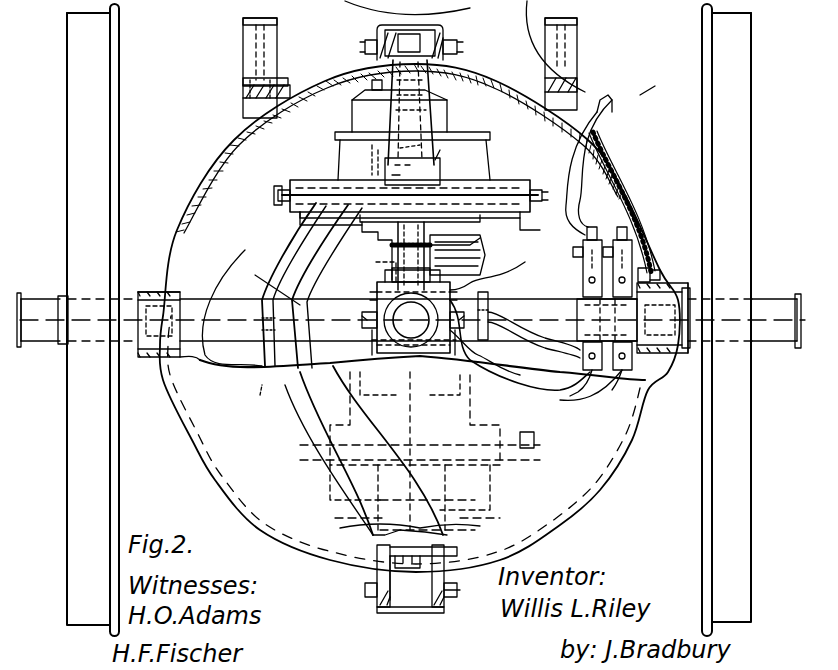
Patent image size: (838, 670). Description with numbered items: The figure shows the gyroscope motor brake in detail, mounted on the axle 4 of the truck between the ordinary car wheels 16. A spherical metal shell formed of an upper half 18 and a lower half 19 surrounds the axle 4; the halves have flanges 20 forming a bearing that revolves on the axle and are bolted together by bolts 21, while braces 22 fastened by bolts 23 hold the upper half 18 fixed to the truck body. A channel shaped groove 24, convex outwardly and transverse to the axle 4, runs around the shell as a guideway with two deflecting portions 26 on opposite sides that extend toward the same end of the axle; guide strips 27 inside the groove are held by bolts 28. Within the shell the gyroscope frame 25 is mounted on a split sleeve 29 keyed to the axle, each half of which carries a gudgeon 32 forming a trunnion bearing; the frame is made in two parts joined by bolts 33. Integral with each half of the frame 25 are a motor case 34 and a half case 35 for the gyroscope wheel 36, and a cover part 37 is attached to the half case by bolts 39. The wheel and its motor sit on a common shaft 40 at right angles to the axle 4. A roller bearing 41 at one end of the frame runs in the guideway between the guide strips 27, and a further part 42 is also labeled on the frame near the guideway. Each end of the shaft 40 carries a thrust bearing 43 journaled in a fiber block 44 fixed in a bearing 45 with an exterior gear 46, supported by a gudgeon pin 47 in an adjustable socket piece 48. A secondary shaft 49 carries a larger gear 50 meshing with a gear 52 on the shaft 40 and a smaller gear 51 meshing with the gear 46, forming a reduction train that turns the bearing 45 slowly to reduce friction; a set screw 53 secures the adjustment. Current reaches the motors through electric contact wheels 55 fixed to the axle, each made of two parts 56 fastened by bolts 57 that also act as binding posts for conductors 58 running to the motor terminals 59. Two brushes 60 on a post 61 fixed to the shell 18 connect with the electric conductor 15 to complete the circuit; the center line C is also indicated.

The axle 4 is at (34, 320).
The electric conductor 15 is at (612, 135).
The car wheels 16 is at (108, 182).
The upper half of spherical shell 18 is at (190, 206).
The lower half of spherical shell 19 is at (198, 458).
The flanges 20 is at (138, 334).
The bolts 21 is at (145, 292).
The braces 22 is at (262, 18).
The bolts 23 is at (243, 82).
The channel shaped groove 24 is at (440, 30).
The frame 25 is at (426, 110).
The deflecting portions 26 is at (228, 282).
The guide strips 27 is at (463, 47).
The bolts 28 is at (360, 50).
The split sleeve 29 is at (490, 300).
The gudgeon 32 is at (455, 380).
The bolts 33 is at (318, 383).
The motor case 34 is at (490, 178).
The half case 35 is at (340, 178).
The gyroscope wheel 36 is at (336, 175).
The cover part 37 is at (300, 222).
The bolts 39 is at (274, 190).
The shaft 40 is at (350, 186).
The roller bearing 41 is at (377, 38).
The arm rib 42 is at (255, 292).
The thrust bearing 43 is at (378, 260).
The fiber block 44 is at (377, 290).
The bearing 45 is at (362, 320).
The gear 46 is at (458, 262).
The gudgeon pin 47 is at (372, 340).
The adjustable socket piece 48 is at (488, 290).
The secondary shaft 49 is at (525, 195).
The gear 50 is at (462, 228).
The gear 51 is at (548, 196).
The gear 52 is at (330, 238).
The set screw 53 is at (494, 268).
The electric contact wheels 55 is at (317, 210).
The parts of contact wheel 56 is at (607, 320).
The bolts 57 is at (640, 260).
The conductors 58 is at (520, 356).
The electric terminals 59 is at (445, 165).
The brushes 60 is at (636, 250).
The post 61 is at (628, 200).
The center line C is at (210, 222).